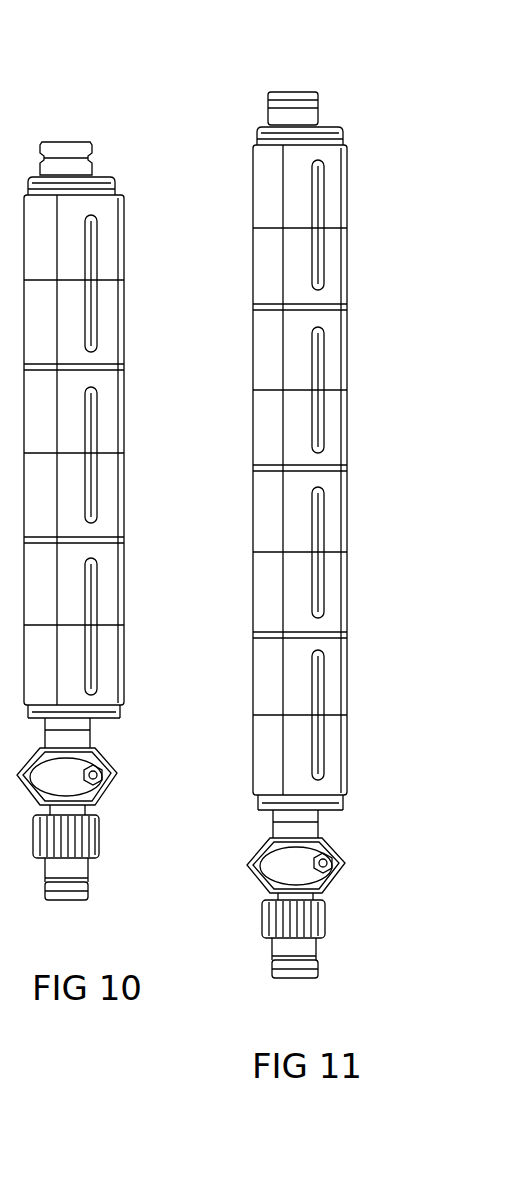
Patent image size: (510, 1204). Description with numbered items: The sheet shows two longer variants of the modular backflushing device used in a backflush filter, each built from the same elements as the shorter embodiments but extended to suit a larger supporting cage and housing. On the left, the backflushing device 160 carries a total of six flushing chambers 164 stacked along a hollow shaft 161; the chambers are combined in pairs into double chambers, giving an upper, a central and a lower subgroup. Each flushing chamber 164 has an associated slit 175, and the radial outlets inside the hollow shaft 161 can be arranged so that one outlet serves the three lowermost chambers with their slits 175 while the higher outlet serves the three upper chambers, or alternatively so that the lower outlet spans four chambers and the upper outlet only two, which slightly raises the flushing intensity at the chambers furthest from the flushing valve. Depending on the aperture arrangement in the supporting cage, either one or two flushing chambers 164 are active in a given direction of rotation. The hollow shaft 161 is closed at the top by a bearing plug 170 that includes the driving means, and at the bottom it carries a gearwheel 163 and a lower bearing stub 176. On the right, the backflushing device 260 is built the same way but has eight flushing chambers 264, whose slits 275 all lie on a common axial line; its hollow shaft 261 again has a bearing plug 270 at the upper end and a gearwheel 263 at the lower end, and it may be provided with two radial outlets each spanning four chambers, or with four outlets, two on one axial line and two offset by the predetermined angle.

In FIG. 10, the backflushing device 160 is at (72, 126).
In FIG. 10, the bearing plug 170 is at (92, 150).
In FIG. 10, the flushing chambers 164 is at (131, 256).
In FIG. 10, the slit 175 is at (97, 330).
In FIG. 10, the hollow shaft 161 is at (92, 742).
In FIG. 10, the gearwheel 163 is at (106, 843).
In FIG. 10, the lower bearing stub 176 is at (89, 893).
In FIG. 11, the backflushing device 260 is at (282, 82).
In FIG. 11, the bearing plug 270 is at (311, 100).
In FIG. 11, the flushing chambers 264 is at (243, 188).
In FIG. 11, the slits 275 is at (314, 270).
In FIG. 11, the hollow shaft 261 is at (290, 822).
In FIG. 11, the gearwheel 263 is at (256, 915).